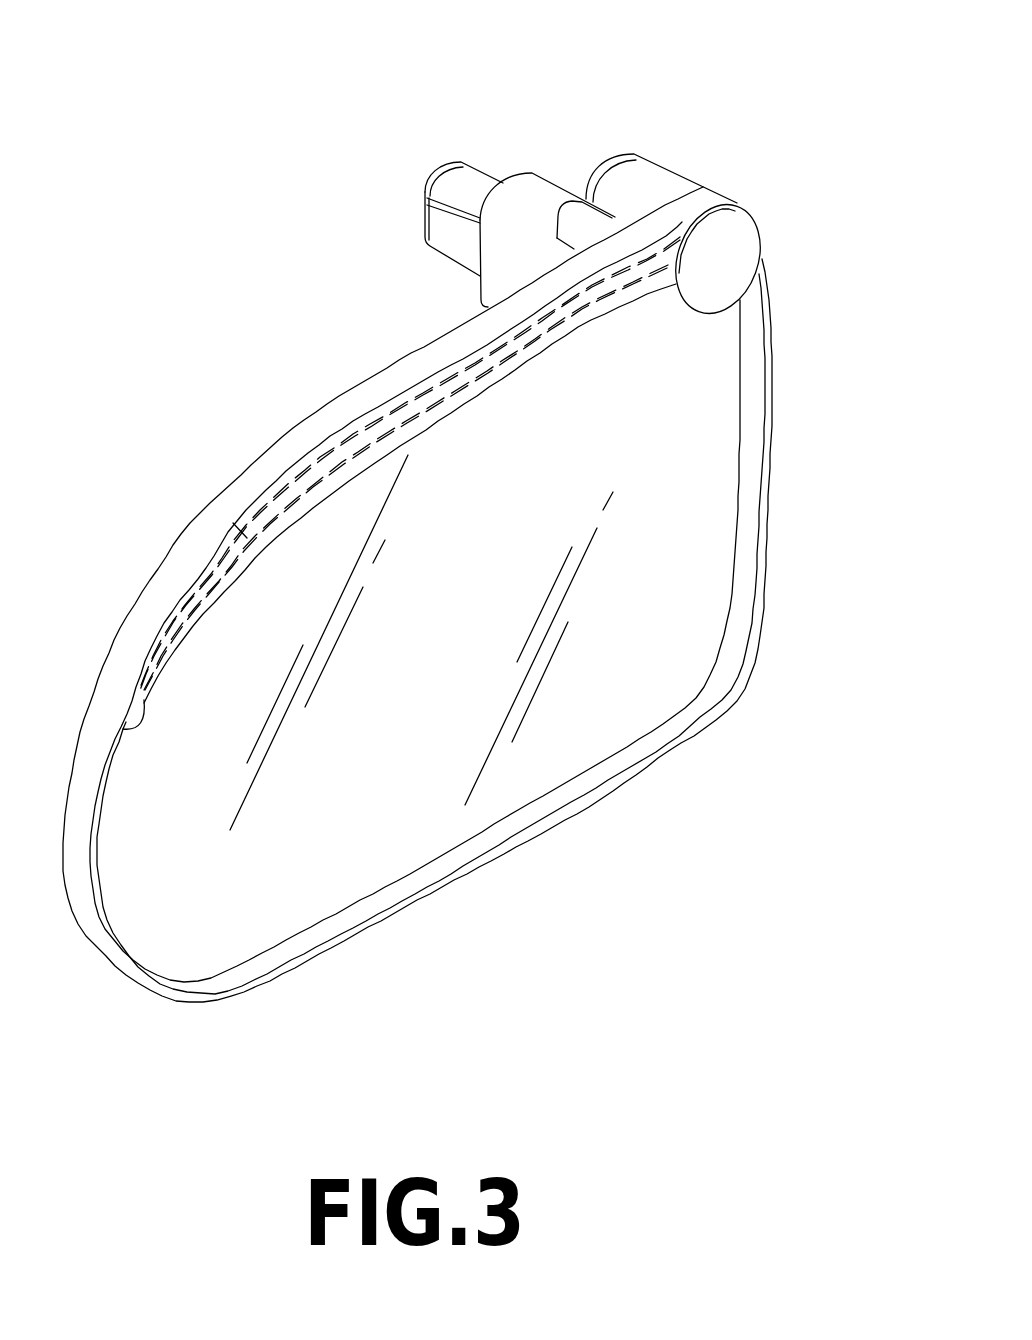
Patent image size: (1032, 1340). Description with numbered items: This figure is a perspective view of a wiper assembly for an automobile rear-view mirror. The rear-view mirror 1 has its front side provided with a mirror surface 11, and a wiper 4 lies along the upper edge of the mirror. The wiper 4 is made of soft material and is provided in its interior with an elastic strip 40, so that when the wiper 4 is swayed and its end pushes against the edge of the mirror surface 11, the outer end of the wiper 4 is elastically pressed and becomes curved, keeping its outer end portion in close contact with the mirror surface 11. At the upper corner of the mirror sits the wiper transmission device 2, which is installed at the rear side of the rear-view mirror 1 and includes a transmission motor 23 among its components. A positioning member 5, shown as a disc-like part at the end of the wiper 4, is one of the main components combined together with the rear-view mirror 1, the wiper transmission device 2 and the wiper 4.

The rear-view mirror 1 is at (210, 1000).
The mirror surface 11 is at (368, 848).
The wiper transmission device 2 is at (662, 130).
The transmission motor 23 is at (473, 177).
The wiper 4 is at (401, 483).
The elastic strip 40 is at (225, 517).
The positioning member 5 is at (723, 257).